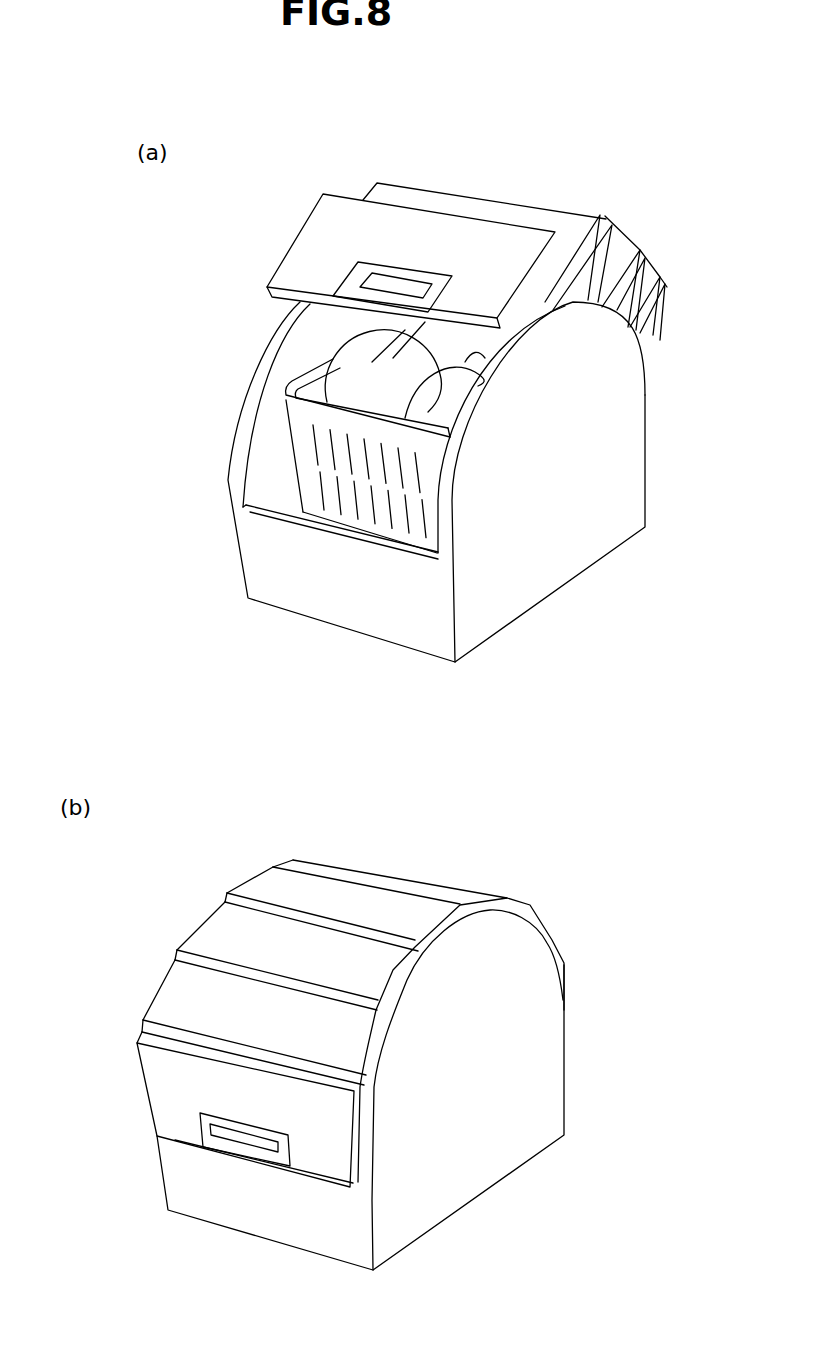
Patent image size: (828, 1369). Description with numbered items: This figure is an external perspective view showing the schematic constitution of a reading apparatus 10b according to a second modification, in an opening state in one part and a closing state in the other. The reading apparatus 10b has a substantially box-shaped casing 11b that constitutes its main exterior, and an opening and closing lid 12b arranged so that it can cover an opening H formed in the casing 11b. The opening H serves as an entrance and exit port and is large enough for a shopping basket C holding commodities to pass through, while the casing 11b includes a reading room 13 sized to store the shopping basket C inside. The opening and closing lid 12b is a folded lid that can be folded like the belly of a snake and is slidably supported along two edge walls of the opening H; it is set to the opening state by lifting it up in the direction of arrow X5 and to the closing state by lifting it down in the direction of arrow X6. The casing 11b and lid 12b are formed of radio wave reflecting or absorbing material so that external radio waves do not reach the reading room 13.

The reading apparatus 10b is at (648, 226).
The casing 11b is at (548, 560).
The opening and closing lid 12b is at (503, 243).
The reading room 13 is at (282, 365).
The opening H is at (262, 480).
The shopping basket C is at (361, 508).
The arrow indicating opening direction X5 is at (325, 160).
The arrow indicating closing direction X6 is at (247, 805).